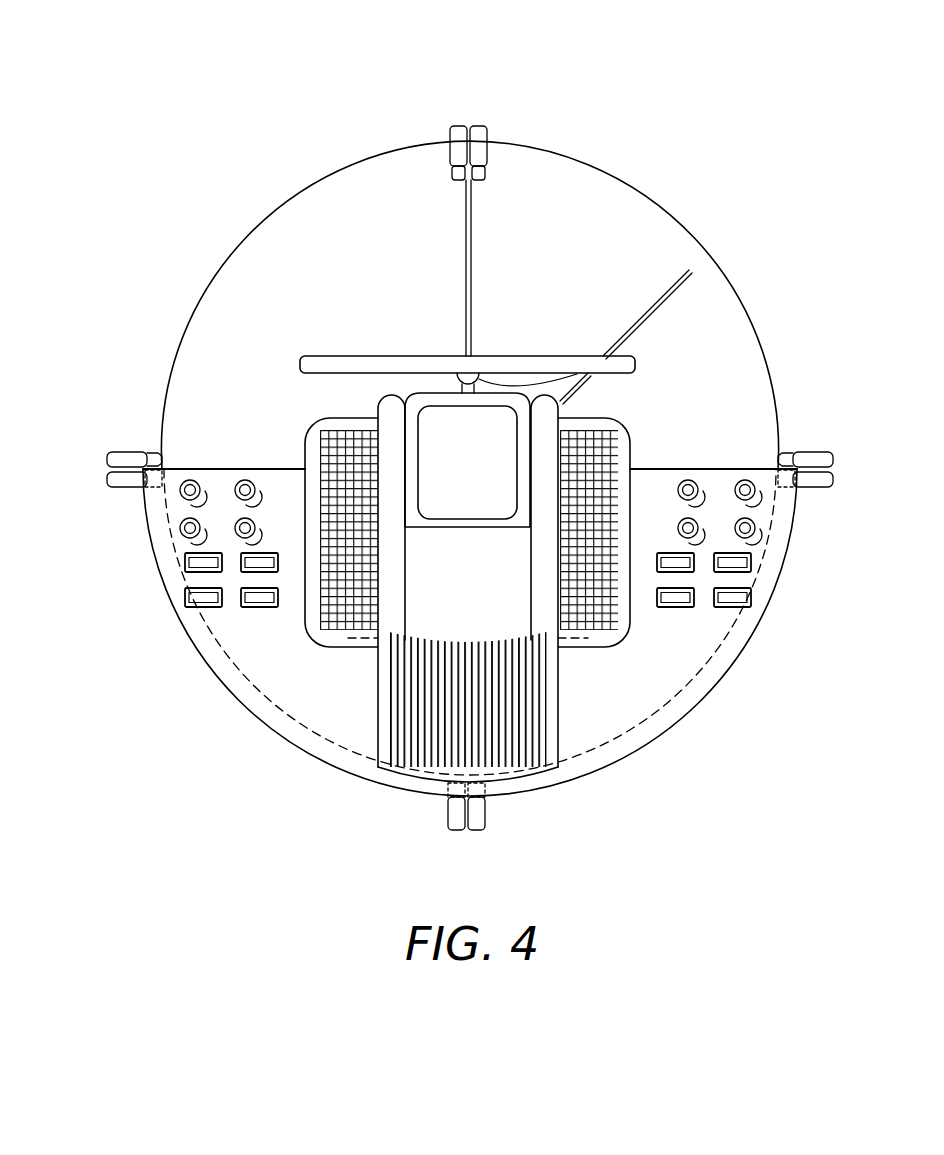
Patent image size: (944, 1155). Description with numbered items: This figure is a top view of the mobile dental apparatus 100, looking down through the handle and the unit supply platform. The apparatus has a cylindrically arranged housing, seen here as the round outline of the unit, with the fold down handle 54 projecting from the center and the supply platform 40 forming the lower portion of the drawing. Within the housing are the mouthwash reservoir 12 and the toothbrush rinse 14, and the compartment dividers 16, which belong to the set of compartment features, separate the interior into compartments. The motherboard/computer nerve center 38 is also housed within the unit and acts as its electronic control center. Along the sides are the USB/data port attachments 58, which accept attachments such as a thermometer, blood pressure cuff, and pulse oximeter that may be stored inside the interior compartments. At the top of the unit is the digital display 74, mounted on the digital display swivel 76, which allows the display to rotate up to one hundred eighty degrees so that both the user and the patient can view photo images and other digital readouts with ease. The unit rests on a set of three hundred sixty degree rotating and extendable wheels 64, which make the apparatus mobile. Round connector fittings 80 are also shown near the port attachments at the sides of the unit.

The sensor unit 100 is at (208, 83).
The mouthwash reservoir 12 is at (740, 395).
The toothbrush rinse 14 is at (598, 245).
The compartment dividers 16 is at (472, 253).
The motherboard/computer nerve center 38 is at (282, 266).
The supply platform 40 is at (607, 693).
The fold down handle 54 is at (508, 765).
The USB/data port attachments 58 is at (190, 597).
The 360 degree rotating and extendable wheels 64 is at (457, 817).
The digital display 74 is at (547, 363).
The digital display swivel 76 is at (573, 376).
The circular connectors 80 is at (745, 526).